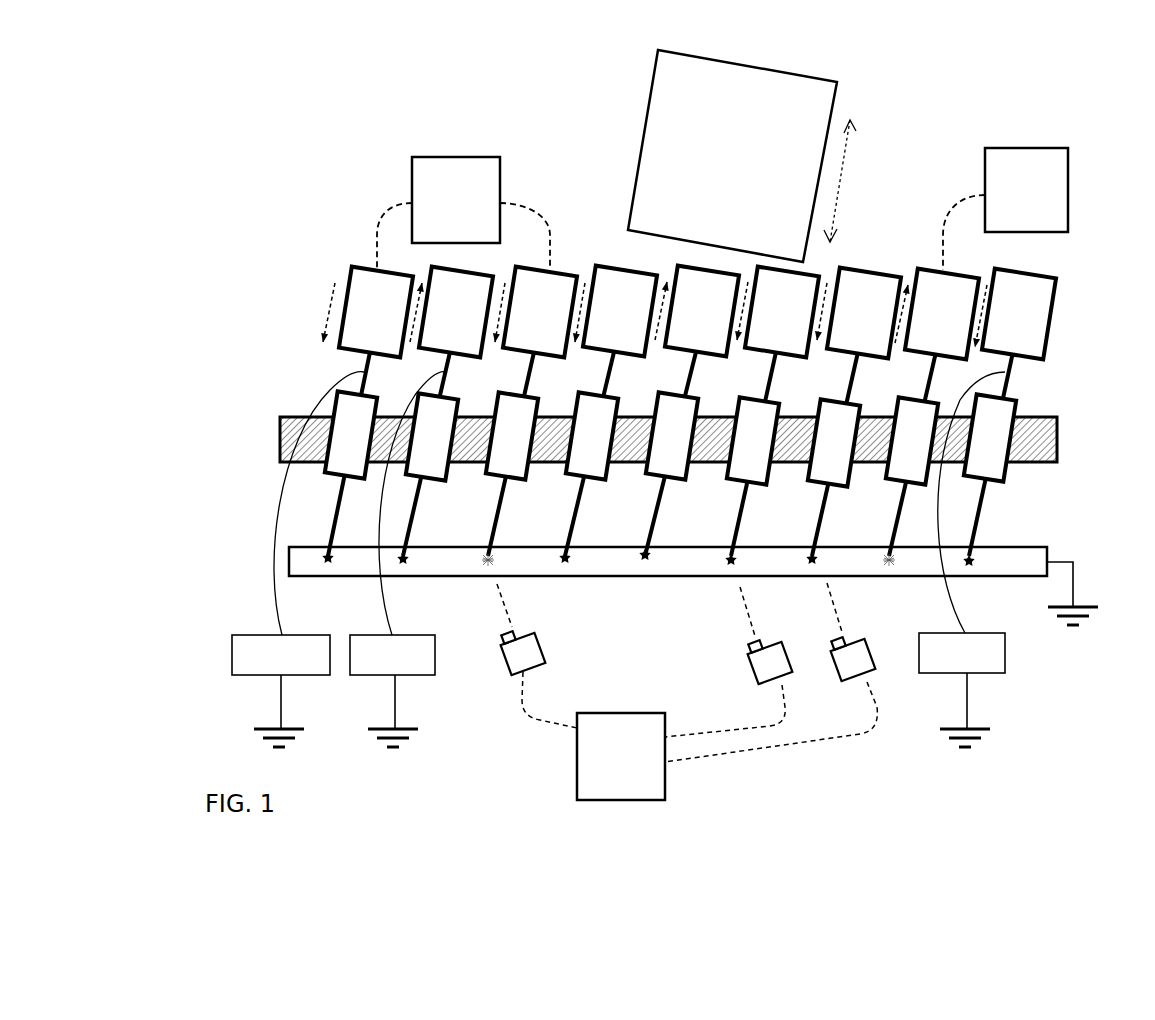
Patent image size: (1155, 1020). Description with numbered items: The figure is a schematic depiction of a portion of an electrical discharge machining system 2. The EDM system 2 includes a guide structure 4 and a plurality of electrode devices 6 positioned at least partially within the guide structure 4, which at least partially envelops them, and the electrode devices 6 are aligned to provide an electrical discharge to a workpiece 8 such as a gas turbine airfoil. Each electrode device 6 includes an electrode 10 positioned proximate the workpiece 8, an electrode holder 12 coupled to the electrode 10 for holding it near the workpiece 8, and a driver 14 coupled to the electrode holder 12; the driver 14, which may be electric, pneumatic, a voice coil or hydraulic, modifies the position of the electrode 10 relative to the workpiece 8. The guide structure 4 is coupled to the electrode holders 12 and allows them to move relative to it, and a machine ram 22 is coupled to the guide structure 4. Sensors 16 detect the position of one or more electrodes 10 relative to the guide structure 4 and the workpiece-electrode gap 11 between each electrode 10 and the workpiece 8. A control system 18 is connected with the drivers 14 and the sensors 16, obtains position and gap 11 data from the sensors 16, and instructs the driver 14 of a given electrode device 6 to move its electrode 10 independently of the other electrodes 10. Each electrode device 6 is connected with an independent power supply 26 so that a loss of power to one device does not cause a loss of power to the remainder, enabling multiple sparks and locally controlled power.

The electrical discharge machining (EDM) system 2 is at (290, 155).
The guide structure 4 is at (249, 423).
The electrode device 6 is at (338, 262).
The workpiece 8 is at (695, 566).
The electrode 10 is at (501, 494).
The workpiece-electrode gap 11 is at (241, 575).
The electrode holder 12 is at (670, 438).
The driver 14 is at (699, 313).
The sensor 16 is at (513, 664).
The control system 18 is at (446, 236).
The machine ram 22 is at (727, 184).
The independent power supply (IPS) 26 is at (307, 666).